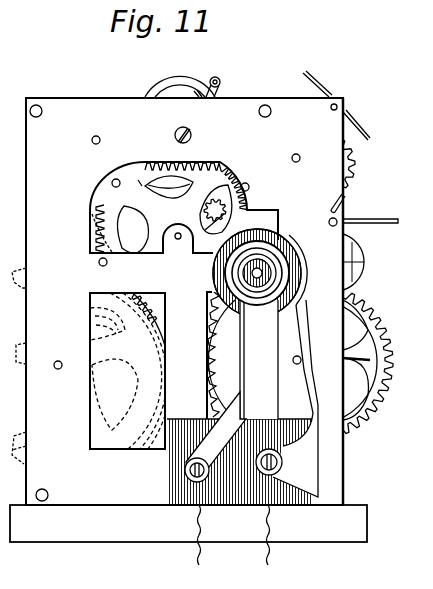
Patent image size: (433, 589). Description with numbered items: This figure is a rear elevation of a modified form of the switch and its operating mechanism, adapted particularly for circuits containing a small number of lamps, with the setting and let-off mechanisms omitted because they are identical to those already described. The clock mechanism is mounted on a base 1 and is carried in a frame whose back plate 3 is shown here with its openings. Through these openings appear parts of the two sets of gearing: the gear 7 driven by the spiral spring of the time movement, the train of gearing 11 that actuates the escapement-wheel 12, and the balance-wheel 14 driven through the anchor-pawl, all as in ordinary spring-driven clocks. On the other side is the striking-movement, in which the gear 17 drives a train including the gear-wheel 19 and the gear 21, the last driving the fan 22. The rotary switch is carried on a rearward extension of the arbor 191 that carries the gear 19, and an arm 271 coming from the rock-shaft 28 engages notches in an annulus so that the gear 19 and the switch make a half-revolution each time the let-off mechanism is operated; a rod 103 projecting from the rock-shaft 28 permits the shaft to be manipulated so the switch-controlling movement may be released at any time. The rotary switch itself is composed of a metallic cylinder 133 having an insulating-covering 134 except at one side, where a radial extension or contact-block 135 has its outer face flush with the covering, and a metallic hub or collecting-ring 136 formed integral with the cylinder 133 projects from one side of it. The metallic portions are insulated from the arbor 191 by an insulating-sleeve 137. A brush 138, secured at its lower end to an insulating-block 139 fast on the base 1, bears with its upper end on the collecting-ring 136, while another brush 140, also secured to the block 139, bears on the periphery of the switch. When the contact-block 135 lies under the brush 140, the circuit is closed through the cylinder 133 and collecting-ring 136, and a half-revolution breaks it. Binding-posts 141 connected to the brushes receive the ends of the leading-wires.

The base 1 is at (188, 523).
The back plate 3 is at (177, 301).
The gear 7 is at (134, 384).
The train of gearing 11 is at (169, 208).
The escapement-wheel 12 is at (140, 186).
The balance-wheel 14 is at (183, 90).
The gear 17 is at (372, 316).
The gear-wheel 19 is at (215, 211).
The gear 21 is at (353, 163).
The fan 22 is at (350, 125).
The rock-shaft 28 is at (345, 219).
The rod 103 is at (370, 214).
The metallic cylinder 133 is at (282, 248).
The insulating-covering 134 is at (258, 236).
The contact-block 135 is at (303, 266).
The collecting-ring 136 is at (236, 268).
The insulating-sleeve 137 is at (246, 275).
The brush 138 is at (249, 374).
The insulating-block 139 is at (168, 477).
The brush 140 is at (304, 341).
The binding-posts 141 is at (284, 460).
The arbor 191 is at (262, 273).
The pinion 271 is at (366, 262).